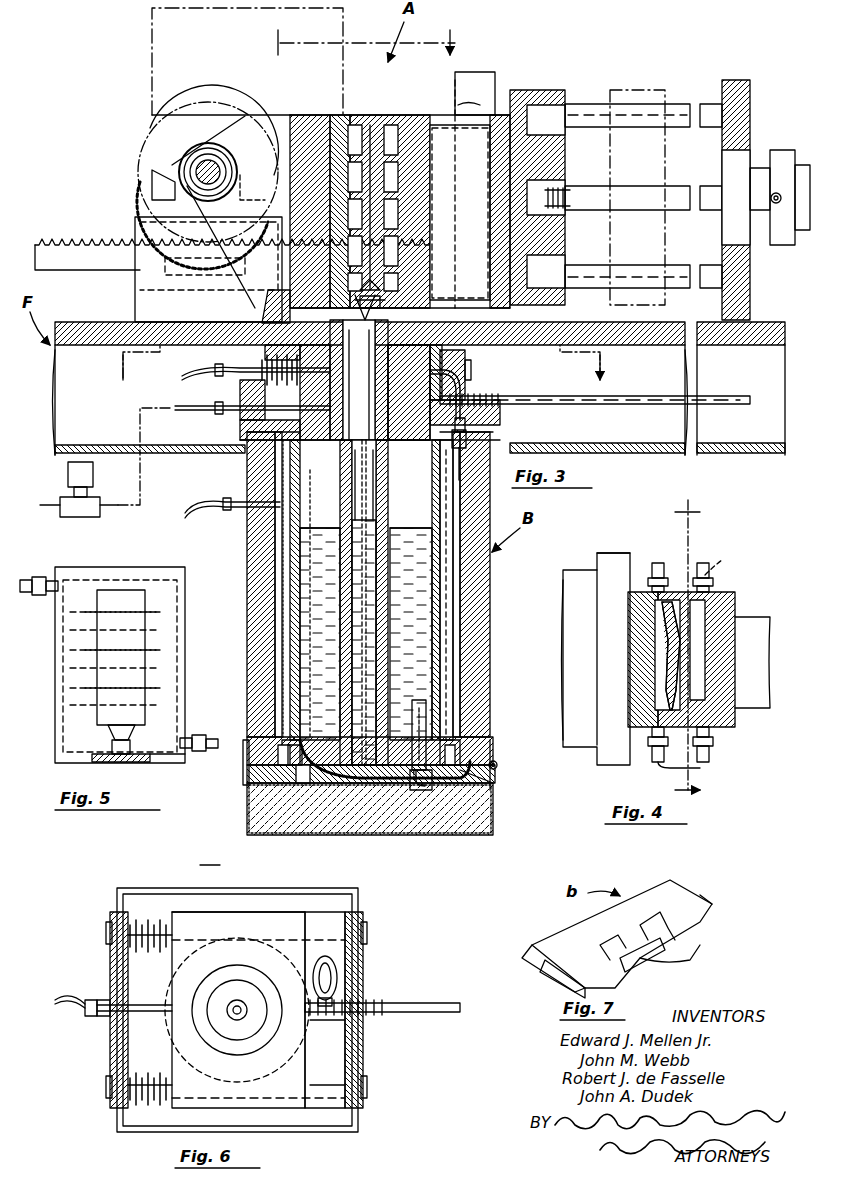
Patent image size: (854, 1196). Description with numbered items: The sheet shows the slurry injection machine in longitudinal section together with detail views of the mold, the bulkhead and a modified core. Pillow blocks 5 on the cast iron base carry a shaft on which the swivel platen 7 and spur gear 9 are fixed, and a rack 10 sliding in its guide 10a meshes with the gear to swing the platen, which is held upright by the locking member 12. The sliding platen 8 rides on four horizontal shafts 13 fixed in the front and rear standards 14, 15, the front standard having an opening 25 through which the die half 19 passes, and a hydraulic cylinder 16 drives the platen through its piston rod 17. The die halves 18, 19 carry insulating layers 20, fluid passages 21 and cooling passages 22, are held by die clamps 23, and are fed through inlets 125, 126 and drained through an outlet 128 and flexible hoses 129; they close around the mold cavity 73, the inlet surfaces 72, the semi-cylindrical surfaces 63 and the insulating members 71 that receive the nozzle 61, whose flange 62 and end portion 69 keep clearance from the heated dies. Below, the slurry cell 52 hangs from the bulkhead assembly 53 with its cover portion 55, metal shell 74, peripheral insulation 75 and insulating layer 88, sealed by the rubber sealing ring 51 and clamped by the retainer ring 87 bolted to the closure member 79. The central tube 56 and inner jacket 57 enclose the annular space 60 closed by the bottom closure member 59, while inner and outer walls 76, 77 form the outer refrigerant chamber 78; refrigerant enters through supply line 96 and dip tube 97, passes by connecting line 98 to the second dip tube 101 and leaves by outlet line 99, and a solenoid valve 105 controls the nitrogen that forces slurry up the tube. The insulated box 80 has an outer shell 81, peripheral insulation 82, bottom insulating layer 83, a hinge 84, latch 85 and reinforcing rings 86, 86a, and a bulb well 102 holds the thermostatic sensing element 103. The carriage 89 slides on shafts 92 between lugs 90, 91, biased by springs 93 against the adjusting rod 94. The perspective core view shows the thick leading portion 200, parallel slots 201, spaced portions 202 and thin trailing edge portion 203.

In FIG. 3, the pillow blocks 5 is at (165, 184).
In FIG. 4, the pillow blocks 5 is at (674, 644).
In FIG. 3, the swivel platen 7 is at (150, 32).
In FIG. 4, the swivel platen 7 is at (606, 562).
In FIG. 3, the platen 8 is at (535, 92).
In FIG. 3, the spur gear 9 is at (152, 138).
In FIG. 3, the rack 10 is at (56, 242).
In FIG. 3, the guide 10a is at (135, 226).
In FIG. 3, the locking member 12 is at (262, 302).
In FIG. 3, the horizontal shafts 13 is at (680, 100).
In FIG. 3, the front vertical standard 14 is at (458, 85).
In FIG. 3, the rear vertical standard 15 is at (752, 88).
In FIG. 3, the hydraulic cylinder 16 is at (793, 162).
In FIG. 3, the piston rod 17 is at (630, 186).
In FIG. 3, the left die half 18 is at (402, 183).
In FIG. 4, the left die half 18 is at (672, 562).
In FIG. 3, the right die half 19 is at (378, 115).
In FIG. 4, the right die half 19 is at (740, 726).
In FIG. 5, the right die half 19 is at (156, 572).
In FIG. 3, the insulating layer 20 is at (325, 115).
In FIG. 4, the insulating layer 20 is at (730, 592).
In FIG. 4, the fluid passages 21 is at (660, 614).
In FIG. 3, the cooling passages 22 is at (400, 226).
In FIG. 4, the cooling passages 22 is at (700, 618).
In FIG. 5, the cooling passages 22 is at (165, 600).
In FIG. 4, the die clamp 23 is at (633, 562).
In FIG. 3, the opening 25 is at (458, 104).
In FIG. 3, the sealing ring 51 is at (348, 390).
In FIG. 3, the slurry cell 52 is at (332, 814).
In FIG. 6, the slurry cell 52 is at (248, 940).
In FIG. 3, the bulkhead assembly 53 is at (260, 430).
In FIG. 6, the bulkhead assembly 53 is at (218, 912).
In FIG. 3, the cover portion 55 is at (409, 410).
In FIG. 6, the cover portion 55 is at (172, 1120).
In FIG. 3, the central vertical tube 56 is at (386, 578).
In FIG. 3, the inner jacket 57 is at (380, 606).
In FIG. 3, the bottom annular closure member 59 is at (290, 756).
In FIG. 3, the annular space 60 is at (385, 648).
In FIG. 3, the nozzle 61 is at (482, 261).
In FIG. 6, the nozzle 61 is at (244, 990).
In FIG. 6, the flange 62 is at (225, 992).
In FIG. 5, the semi-cylindrical surfaces 63 is at (148, 760).
In FIG. 6, the annular end portion 69 is at (238, 1018).
In FIG. 5, the insulating members 71 is at (112, 762).
In FIG. 5, the inlet surfaces 72 is at (122, 724).
In FIG. 3, the mold cavity 73 is at (398, 170).
In FIG. 4, the mold cavity 73 is at (688, 665).
In FIG. 5, the mold cavity 73 is at (100, 662).
In FIG. 3, the metal shell 74 is at (468, 432).
In FIG. 6, the metal shell 74 is at (310, 912).
In FIG. 3, the peripheral insulation 75 is at (294, 398).
In FIG. 3, the inner wall 76 is at (438, 520).
In FIG. 3, the outer wall 77 is at (252, 535).
In FIG. 3, the refrigerant chamber 78 is at (290, 512).
In FIG. 3, the annular closure member 79 is at (284, 722).
In FIG. 3, the insulated box 80 is at (248, 640).
In FIG. 3, the outer metal shell 81 is at (482, 632).
In FIG. 6, the outer metal shell 81 is at (335, 1132).
In FIG. 3, the peripheral insulation 82 is at (490, 584).
In FIG. 3, the bottom insulating layer 83 is at (450, 836).
In FIG. 3, the hinge 84 is at (497, 760).
In FIG. 6, the hinge 84 is at (368, 945).
In FIG. 3, the latch 85 is at (246, 770).
In FIG. 6, the latch 85 is at (105, 1000).
In FIG. 3, the reinforcing ring 86 is at (470, 742).
In FIG. 3, the reinforcing ring 86a is at (470, 780).
In FIG. 3, the retainer ring 87 is at (300, 784).
In FIG. 3, the annular insulating layer 88 is at (420, 292).
In FIG. 6, the carriage 89 is at (165, 905).
In FIG. 6, the lug 90 is at (110, 1060).
In FIG. 3, the lug 91 is at (478, 352).
In FIG. 6, the lug 91 is at (365, 1040).
In FIG. 3, the horizontal shafts 92 is at (488, 370).
In FIG. 6, the horizontal shafts 92 is at (368, 918).
In FIG. 3, the spring 93 is at (258, 362).
In FIG. 6, the spring 93 is at (130, 950).
In FIG. 3, the adjusting rod 94 is at (735, 396).
In FIG. 6, the adjusting rod 94 is at (425, 1014).
In FIG. 3, the supply line 96 is at (182, 378).
In FIG. 6, the supply line 96 is at (58, 1002).
In FIG. 3, the dip tube 97 is at (340, 626).
In FIG. 3, the flexible connecting line 98 is at (470, 397).
In FIG. 6, the flexible connecting line 98 is at (338, 975).
In FIG. 3, the flexible outlet line 99 is at (187, 512).
In FIG. 3, the second dip tube 101 is at (452, 650).
In FIG. 3, the bulb well 102 is at (418, 702).
In FIG. 3, the thermostatic sensing element 103 is at (397, 795).
In FIG. 3, the solenoid valve 105 is at (62, 510).
In FIG. 4, the inlet 125 is at (668, 760).
In FIG. 4, the inlet 126 is at (705, 742).
In FIG. 5, the inlet 126 is at (204, 736).
In FIG. 5, the outlet 128 is at (40, 576).
In FIG. 4, the flexible hoses 129 is at (722, 556).
In FIG. 7, the leading portion 200 is at (530, 946).
In FIG. 7, the slots 201 is at (650, 950).
In FIG. 7, the spaced portions 202 is at (680, 962).
In FIG. 7, the trailing edge portion 203 is at (712, 912).